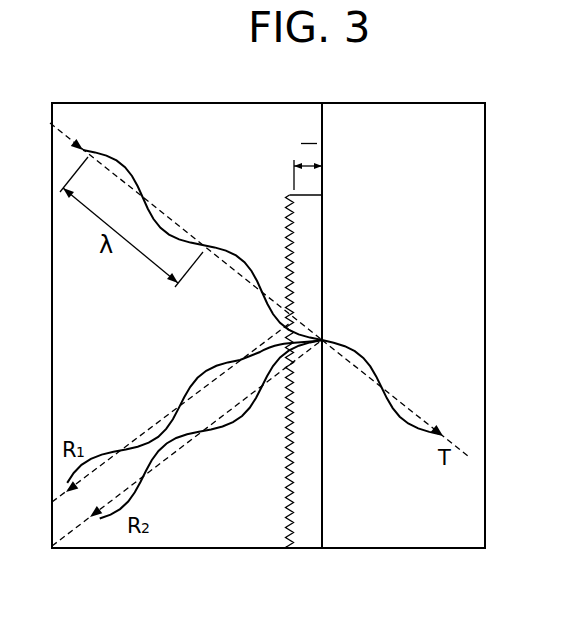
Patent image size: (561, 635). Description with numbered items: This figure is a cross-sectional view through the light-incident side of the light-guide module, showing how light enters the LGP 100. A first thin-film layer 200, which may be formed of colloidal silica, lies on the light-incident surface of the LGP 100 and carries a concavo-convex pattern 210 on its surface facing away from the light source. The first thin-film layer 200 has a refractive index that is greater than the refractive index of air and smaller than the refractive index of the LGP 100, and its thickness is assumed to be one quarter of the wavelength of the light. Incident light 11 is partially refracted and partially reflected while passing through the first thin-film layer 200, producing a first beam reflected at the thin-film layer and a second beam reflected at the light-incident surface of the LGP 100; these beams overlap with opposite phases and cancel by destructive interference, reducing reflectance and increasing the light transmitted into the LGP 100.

The incident light 11 is at (121, 163).
The LGP 100 is at (390, 540).
The first thin-film layer 200 is at (307, 540).
The concavo-convex pattern 210 is at (287, 520).